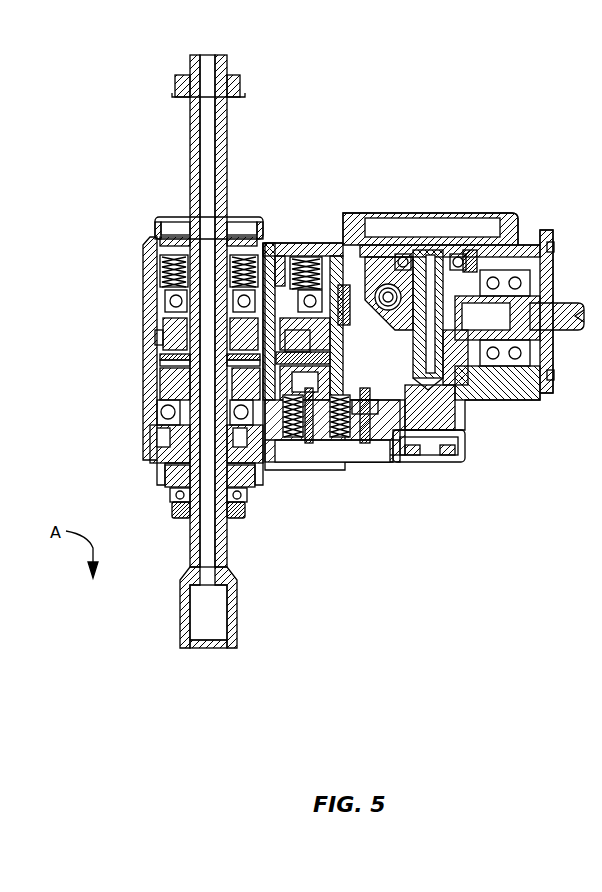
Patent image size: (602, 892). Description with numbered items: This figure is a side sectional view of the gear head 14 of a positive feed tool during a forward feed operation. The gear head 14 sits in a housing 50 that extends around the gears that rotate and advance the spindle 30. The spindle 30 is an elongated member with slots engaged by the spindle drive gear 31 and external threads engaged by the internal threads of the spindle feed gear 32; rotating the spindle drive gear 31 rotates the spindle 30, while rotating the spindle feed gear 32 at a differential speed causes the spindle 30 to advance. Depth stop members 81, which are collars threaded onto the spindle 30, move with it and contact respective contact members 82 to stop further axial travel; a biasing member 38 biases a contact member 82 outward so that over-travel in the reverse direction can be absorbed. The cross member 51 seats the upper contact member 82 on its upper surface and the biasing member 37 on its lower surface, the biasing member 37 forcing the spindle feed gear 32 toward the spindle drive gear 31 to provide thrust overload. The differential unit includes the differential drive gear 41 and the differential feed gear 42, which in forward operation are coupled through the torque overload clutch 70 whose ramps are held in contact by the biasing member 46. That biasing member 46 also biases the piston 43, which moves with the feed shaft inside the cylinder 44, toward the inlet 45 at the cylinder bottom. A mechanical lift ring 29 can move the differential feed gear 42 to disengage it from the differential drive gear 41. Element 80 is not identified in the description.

The gear head 14 is at (311, 160).
The mechanical lift ring 29 is at (158, 358).
The spindle 30 is at (190, 553).
The spindle drive gear 31 is at (160, 387).
The spindle feed gear 32 is at (160, 335).
The biasing member 37 is at (158, 277).
The biasing member 38 is at (158, 455).
The differential drive gear 41 is at (297, 447).
The differential feed gear 42 is at (275, 347).
The piston 43 is at (357, 450).
The cylinder 44 is at (340, 457).
The inlet 45 is at (320, 455).
The biasing member 46 is at (397, 445).
The housing 50 is at (147, 393).
The cross member 51 is at (158, 230).
The torque overload clutch 70 is at (380, 362).
The seal ring 80 is at (165, 243).
The depth stop member 81 is at (178, 86).
The contact member 82 is at (178, 497).